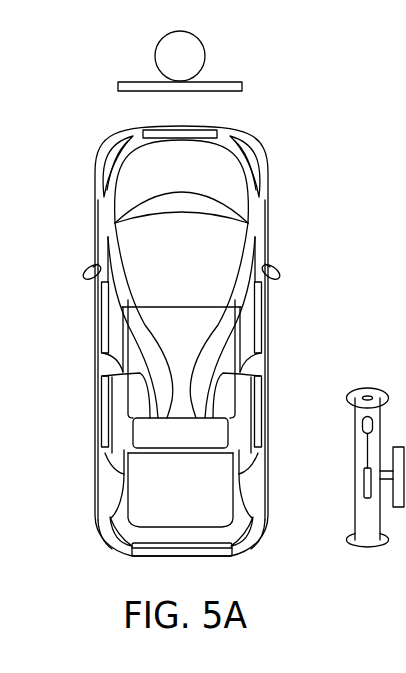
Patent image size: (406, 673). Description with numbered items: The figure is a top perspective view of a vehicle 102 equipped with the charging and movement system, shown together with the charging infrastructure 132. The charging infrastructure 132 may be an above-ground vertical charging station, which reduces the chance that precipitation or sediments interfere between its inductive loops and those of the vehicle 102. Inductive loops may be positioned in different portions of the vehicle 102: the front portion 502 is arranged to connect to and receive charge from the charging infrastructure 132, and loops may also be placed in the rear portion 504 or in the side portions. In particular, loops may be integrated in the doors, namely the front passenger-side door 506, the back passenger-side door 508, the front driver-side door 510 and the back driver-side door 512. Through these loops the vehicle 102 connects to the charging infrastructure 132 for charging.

The vehicle 102 is at (263, 517).
The charging infrastructure 132 is at (242, 84).
The front portion 502 is at (190, 130).
The rear portion 504 is at (132, 550).
The front passenger-side door 506 is at (258, 320).
The back passenger-side door 508 is at (258, 390).
The front driver-side door 510 is at (102, 300).
The back driver-side door 512 is at (102, 405).